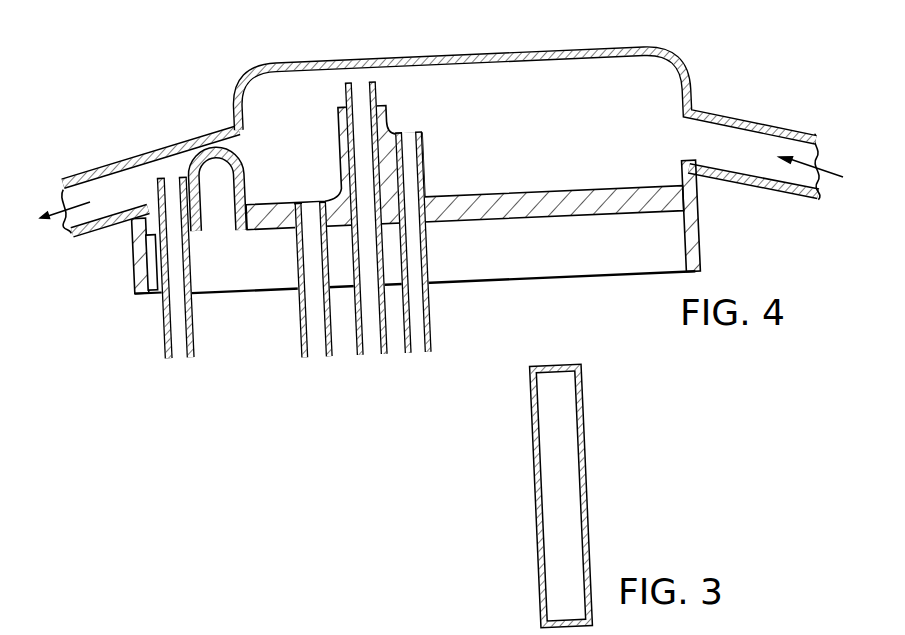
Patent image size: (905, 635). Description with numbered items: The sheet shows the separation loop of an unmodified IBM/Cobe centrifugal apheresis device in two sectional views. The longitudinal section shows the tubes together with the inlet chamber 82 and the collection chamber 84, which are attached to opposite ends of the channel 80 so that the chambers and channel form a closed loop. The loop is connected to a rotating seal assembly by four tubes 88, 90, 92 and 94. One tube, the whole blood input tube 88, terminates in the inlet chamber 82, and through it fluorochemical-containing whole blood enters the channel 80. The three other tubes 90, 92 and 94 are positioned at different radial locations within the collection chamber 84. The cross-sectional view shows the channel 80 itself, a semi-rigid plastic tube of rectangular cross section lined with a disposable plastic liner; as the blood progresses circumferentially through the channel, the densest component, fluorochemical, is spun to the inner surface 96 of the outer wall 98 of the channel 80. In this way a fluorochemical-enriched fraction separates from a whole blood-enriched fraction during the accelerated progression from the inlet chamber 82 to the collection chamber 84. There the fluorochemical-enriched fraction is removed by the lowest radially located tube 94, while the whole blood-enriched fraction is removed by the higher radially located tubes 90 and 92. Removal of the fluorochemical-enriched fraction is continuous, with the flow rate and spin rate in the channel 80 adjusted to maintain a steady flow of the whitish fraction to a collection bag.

In FIG. 4, the channel 80 is at (85, 240).
In FIG. 3, the channel 80 is at (595, 495).
In FIG. 4, the inlet chamber 82 is at (162, 165).
In FIG. 4, the collection chamber 84 is at (526, 93).
In FIG. 4, the whole blood input tube 88 is at (192, 343).
In FIG. 4, the tube 90 is at (302, 343).
In FIG. 4, the tube 92 is at (433, 337).
In FIG. 4, the tube 94 is at (360, 343).
In FIG. 4, the inner surface 96 is at (612, 64).
In FIG. 3, the inner surface 96 is at (592, 516).
In FIG. 4, the outer wall 98 is at (686, 84).
In FIG. 3, the outer wall 98 is at (590, 465).